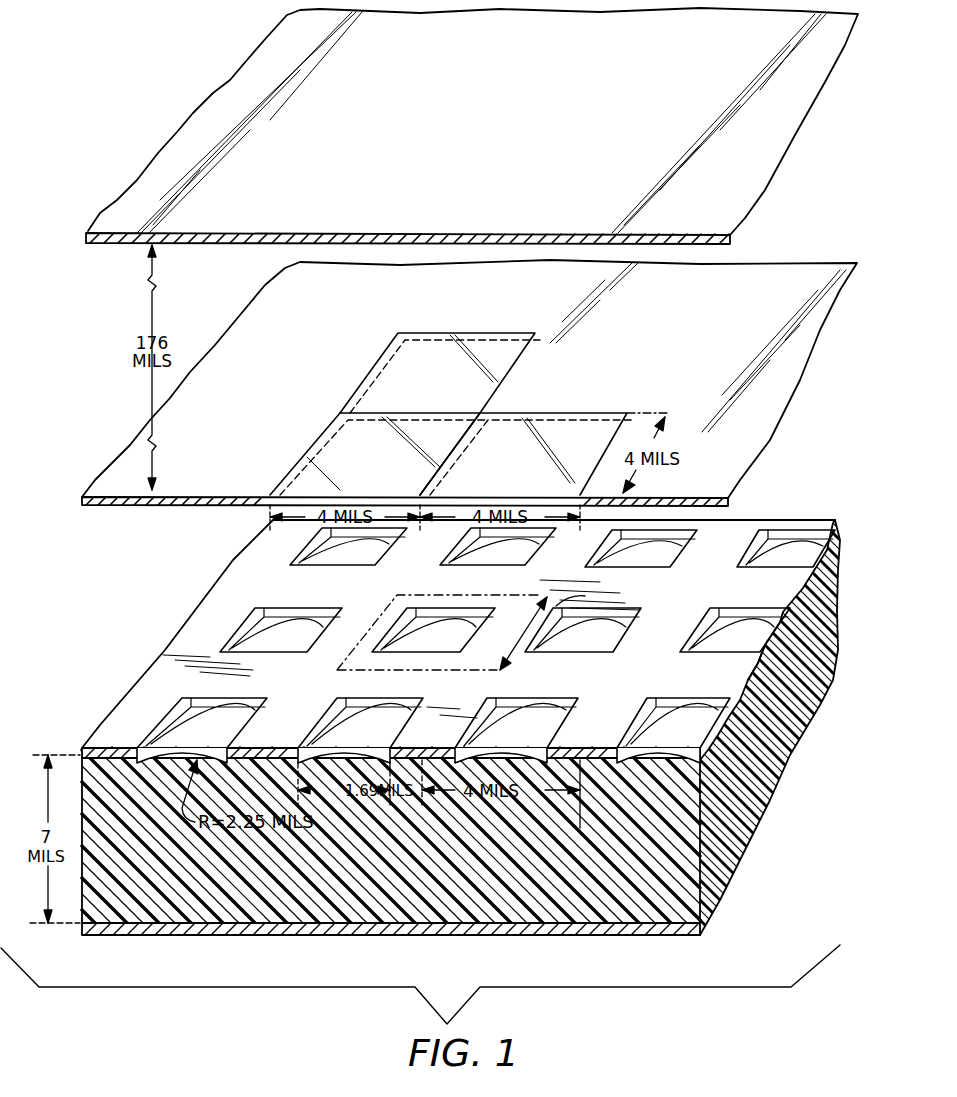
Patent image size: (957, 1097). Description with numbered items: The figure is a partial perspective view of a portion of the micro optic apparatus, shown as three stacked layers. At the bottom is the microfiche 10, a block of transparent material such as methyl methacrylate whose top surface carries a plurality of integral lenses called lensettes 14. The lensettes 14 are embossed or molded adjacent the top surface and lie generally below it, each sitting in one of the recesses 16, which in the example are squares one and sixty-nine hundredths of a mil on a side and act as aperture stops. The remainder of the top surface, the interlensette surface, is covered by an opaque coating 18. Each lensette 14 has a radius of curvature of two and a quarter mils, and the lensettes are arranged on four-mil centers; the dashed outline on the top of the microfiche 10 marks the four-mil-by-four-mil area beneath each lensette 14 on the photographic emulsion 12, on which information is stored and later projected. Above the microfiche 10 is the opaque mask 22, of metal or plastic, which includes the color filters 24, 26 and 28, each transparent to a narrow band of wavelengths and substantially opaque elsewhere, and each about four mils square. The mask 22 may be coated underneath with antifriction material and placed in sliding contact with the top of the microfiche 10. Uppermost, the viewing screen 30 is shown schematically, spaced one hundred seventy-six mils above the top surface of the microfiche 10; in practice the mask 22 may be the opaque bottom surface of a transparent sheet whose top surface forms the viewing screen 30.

The microfiche 10 is at (598, 828).
The photographic emulsion 12 is at (717, 897).
The lensettes 14 is at (750, 640).
The recesses 16 is at (270, 610).
The opaque coating 18 is at (747, 682).
The opaque mask 22 is at (726, 339).
The color filter 24 is at (378, 378).
The color filter 26 is at (325, 450).
The color filter 28 is at (568, 430).
The viewing screen 30 is at (490, 153).